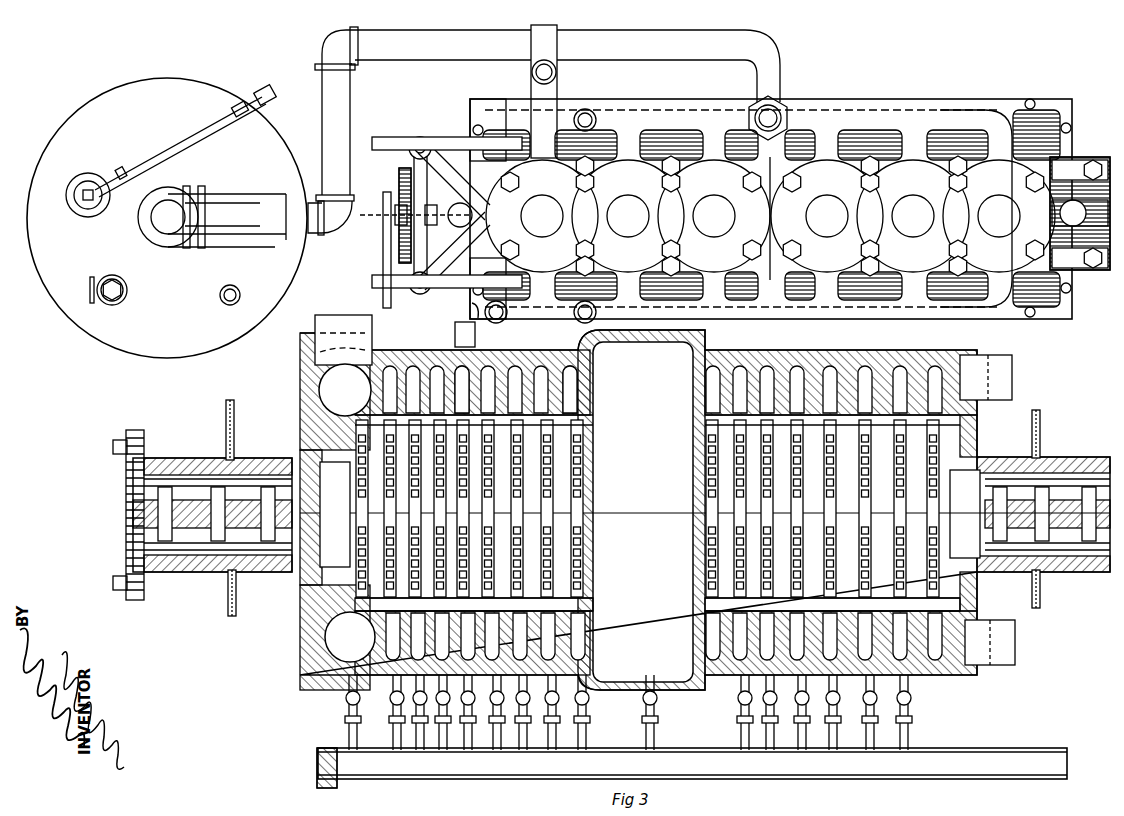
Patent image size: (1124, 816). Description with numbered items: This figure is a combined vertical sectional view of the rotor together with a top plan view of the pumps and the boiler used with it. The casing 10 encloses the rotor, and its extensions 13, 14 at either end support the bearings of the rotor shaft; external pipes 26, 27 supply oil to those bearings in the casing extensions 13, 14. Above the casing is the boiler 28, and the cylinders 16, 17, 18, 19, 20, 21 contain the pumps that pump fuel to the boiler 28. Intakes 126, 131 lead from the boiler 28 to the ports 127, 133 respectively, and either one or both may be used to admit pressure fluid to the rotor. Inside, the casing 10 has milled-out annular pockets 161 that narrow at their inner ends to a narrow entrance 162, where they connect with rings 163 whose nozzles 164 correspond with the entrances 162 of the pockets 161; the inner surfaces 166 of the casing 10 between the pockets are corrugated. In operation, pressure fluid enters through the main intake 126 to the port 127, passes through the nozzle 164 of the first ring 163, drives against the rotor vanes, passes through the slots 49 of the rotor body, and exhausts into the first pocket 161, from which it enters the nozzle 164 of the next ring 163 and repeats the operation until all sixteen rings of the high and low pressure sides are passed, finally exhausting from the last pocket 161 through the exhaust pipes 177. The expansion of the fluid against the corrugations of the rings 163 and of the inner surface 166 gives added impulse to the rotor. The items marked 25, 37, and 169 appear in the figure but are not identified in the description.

The casing 10 is at (962, 673).
The casing extension 13 is at (200, 572).
The casing extension 14 is at (1068, 272).
The cylinder 16 is at (999, 216).
The cylinder 17 is at (913, 216).
The cylinder 18 is at (827, 216).
The cylinder 19 is at (714, 216).
The cylinder 20 is at (628, 216).
The cylinder 21 is at (542, 216).
The manifold casing 25 is at (832, 326).
The external pipe 26 is at (238, 424).
The external pipe 27 is at (242, 606).
The boiler 28 is at (56, 302).
The vertical bracket 37 is at (544, 91).
The slots of the rotor body 49 is at (547, 131).
The main intake 126 is at (302, 344).
The intake port 127 is at (347, 513).
The intake 131 is at (389, 432).
The port 133 is at (468, 389).
The annular pocket 161 is at (392, 378).
The narrow entrance 162 is at (582, 398).
The ring 163 is at (356, 586).
The nozzle 164 is at (320, 441).
The inner surface of the casing 166 is at (664, 518).
The right retaining bar 169 is at (950, 580).
The exhaust pipe 177 is at (1000, 372).